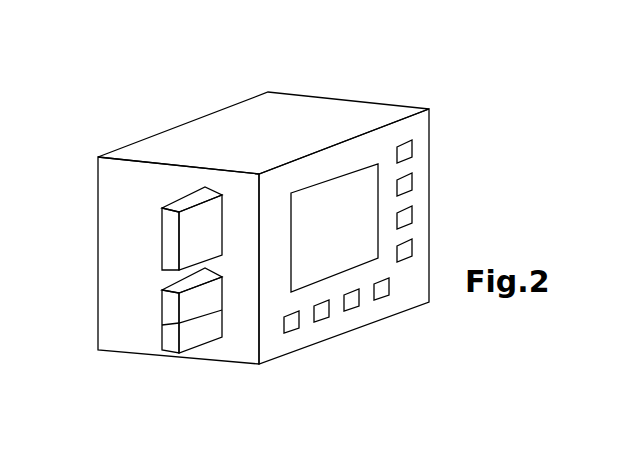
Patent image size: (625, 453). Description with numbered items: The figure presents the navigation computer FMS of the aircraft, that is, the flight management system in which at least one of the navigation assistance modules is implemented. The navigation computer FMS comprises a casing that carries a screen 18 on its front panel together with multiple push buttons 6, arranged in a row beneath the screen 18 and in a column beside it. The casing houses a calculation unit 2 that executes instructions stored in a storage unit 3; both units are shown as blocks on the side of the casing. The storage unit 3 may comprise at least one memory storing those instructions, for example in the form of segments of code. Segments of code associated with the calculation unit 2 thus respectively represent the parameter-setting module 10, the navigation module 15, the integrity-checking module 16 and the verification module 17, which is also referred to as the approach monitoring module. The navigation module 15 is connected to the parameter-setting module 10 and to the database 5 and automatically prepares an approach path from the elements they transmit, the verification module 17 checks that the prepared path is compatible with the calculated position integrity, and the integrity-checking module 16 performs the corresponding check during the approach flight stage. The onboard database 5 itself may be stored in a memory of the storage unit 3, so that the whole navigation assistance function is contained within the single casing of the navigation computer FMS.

The calculation unit 2 is at (168, 240).
The storage unit 3 is at (267, 236).
The onboard database 5 is at (142, 351).
The push buttons 6 is at (402, 152).
The parameter-setting module 10 is at (181, 351).
The navigation module 15 is at (181, 351).
The integrity-checking module 16 is at (181, 351).
The verification module 17 is at (203, 346).
The screen 18 is at (348, 238).
The navigation computer (flight management system) FMS is at (352, 100).